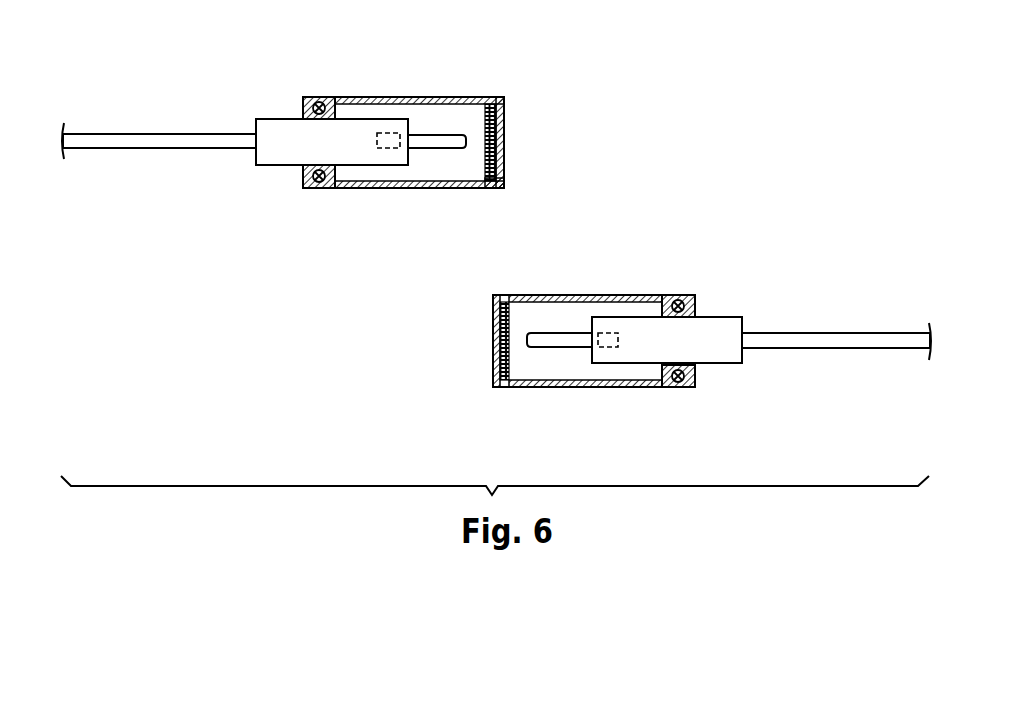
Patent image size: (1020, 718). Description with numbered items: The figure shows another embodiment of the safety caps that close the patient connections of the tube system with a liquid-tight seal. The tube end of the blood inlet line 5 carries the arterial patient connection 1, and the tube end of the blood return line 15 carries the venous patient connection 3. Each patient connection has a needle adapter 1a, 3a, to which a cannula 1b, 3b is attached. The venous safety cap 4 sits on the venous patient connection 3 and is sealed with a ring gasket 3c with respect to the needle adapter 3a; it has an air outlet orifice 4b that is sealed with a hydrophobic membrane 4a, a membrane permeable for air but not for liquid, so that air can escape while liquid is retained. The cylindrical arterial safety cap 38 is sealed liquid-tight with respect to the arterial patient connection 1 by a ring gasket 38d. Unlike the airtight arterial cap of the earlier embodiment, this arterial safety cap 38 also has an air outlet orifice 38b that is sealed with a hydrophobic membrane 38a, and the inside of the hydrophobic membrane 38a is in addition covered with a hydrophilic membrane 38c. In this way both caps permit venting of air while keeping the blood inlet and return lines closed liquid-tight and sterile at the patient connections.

The arterial patient connection 1 is at (359, 150).
The needle adapter 1a is at (281, 118).
The cannula 1b is at (440, 142).
The venous patient connection 3 is at (656, 346).
The needle adapter 3a is at (728, 330).
The cannula 3b is at (573, 340).
The ring gasket 3c is at (672, 388).
The venous safety cap 4 is at (558, 346).
The hydrophobic membrane 4a is at (494, 362).
The air outlet orifice 4b is at (484, 337).
The blood inlet line 5 is at (185, 138).
The blood return line 15 is at (829, 338).
The arterial safety cap 38 is at (444, 135).
The hydrophobic membrane 38a is at (496, 112).
The air outlet orifice 38b is at (507, 152).
The hydrophilic membrane 38c is at (490, 187).
The ring gasket 38d is at (318, 189).